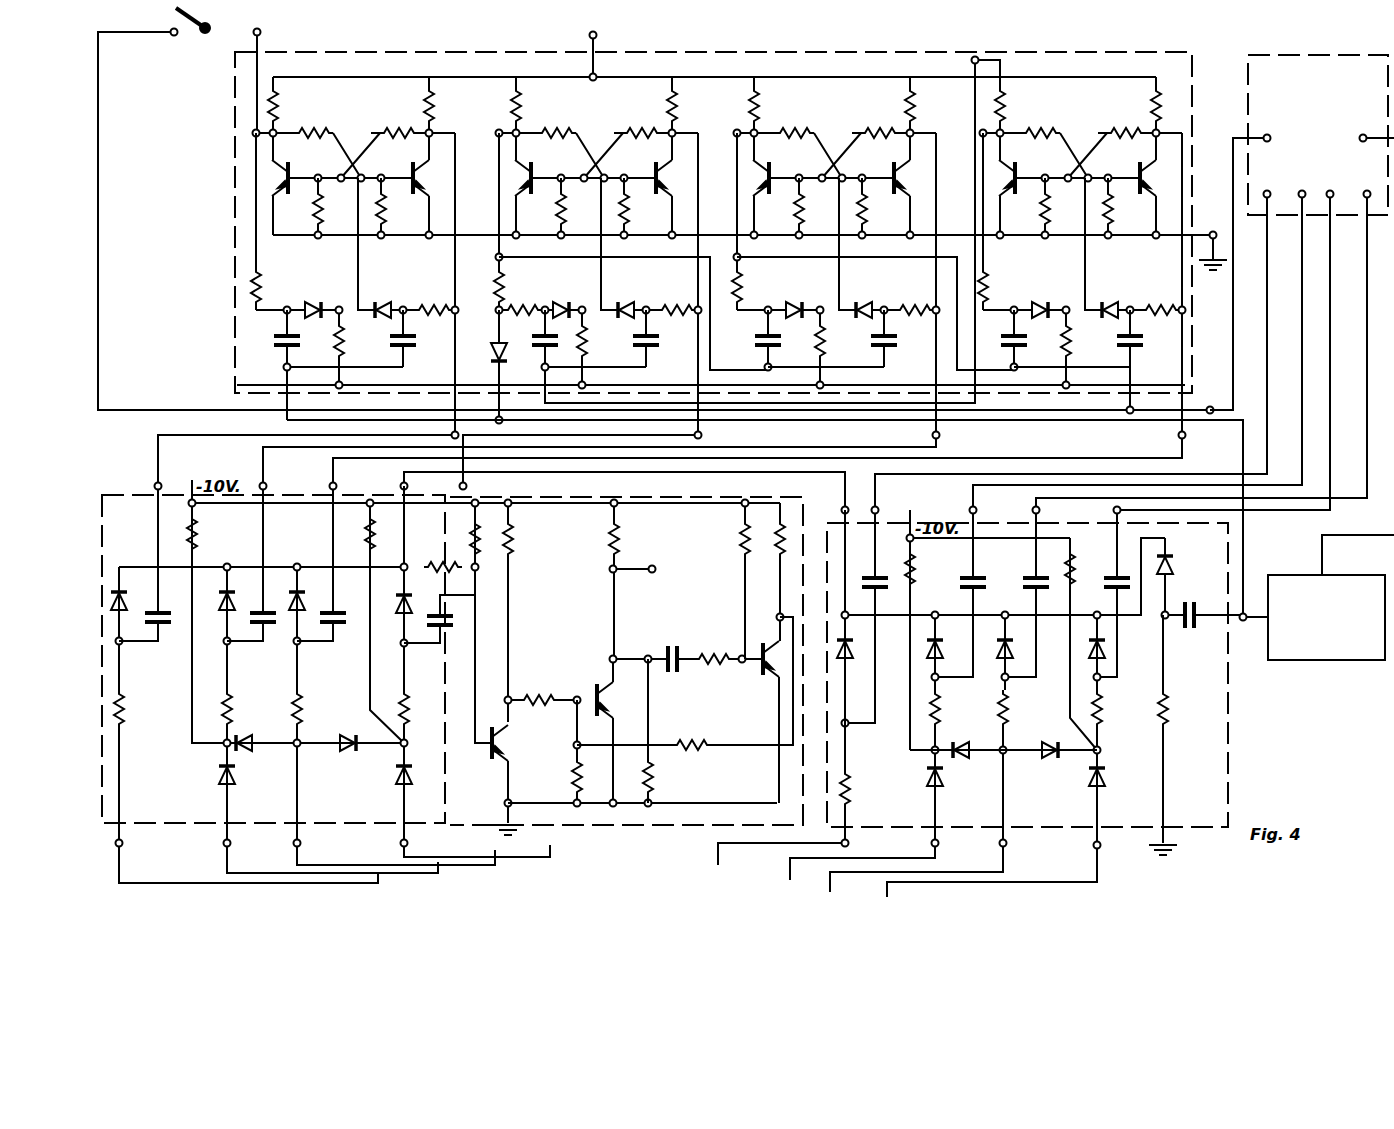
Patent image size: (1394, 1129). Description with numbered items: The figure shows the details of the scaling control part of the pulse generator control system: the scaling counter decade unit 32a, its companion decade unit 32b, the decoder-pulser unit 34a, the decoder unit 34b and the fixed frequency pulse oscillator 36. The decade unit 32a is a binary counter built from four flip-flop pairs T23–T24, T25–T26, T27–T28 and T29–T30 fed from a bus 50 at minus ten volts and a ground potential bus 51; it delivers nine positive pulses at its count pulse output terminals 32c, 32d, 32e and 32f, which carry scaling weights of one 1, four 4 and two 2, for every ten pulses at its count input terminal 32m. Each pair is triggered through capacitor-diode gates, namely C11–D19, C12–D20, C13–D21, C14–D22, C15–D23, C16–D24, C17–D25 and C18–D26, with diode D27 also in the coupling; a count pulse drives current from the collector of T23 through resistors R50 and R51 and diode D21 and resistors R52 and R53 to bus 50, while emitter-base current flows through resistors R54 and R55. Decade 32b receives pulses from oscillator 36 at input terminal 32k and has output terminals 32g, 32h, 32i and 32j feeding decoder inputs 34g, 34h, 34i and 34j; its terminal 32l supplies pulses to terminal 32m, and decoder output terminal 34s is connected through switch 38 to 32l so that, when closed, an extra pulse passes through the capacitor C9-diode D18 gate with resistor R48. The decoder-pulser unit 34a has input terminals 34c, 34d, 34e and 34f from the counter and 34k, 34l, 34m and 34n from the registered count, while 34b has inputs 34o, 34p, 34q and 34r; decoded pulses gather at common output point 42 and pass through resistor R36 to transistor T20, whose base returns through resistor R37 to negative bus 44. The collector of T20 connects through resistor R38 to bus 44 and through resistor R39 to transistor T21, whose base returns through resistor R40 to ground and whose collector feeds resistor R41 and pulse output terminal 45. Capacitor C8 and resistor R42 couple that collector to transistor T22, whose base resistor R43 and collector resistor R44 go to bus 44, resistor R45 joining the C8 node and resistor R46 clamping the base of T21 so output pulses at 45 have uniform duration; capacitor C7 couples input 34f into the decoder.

The single pole switch 38 is at (654, 209).
The scaling counter decade unit 32a is at (235, 140).
The scaling counter decade unit 32b is at (1318, 135).
The bus 50 is at (610, 77).
The ground potential bus 51 is at (708, 232).
The transistor T23 is at (292, 178).
The transistor T24 is at (435, 178).
The transistor T25 is at (546, 173).
The transistor T26 is at (678, 178).
The transistor T27 is at (784, 173).
The transistor T28 is at (916, 178).
The transistor T29 is at (1030, 173).
The transistor T30 is at (1161, 178).
The diode D19 is at (302, 300).
The diode D20 is at (390, 298).
The diode D21 is at (569, 300).
The diode D22 is at (630, 298).
The diode D23 is at (790, 300).
The diode D24 is at (875, 298).
The diode D25 is at (1029, 300).
The diode D26 is at (1118, 298).
The diode D27 is at (484, 367).
The capacitor C11 is at (320, 365).
The capacitor C12 is at (420, 338).
The capacitor C13 is at (755, 230).
The capacitor C14 is at (661, 339).
The capacitor C15 is at (749, 340).
The capacitor C16 is at (850, 339).
The capacitor C17 is at (996, 340).
The capacitor C18 is at (1093, 362).
The resistor R50 is at (508, 280).
The resistor R51 is at (525, 299).
The resistor R52 is at (633, 123).
The resistor R53 is at (669, 112).
The resistor R54 is at (562, 123).
The resistor R55 is at (521, 118).
The scaling weight 1 is at (421, 260).
The scaling weight 4 is at (665, 272).
The scaling weight 2 is at (907, 268).
The count pulse output terminal 32c is at (448, 434).
The count pulse output terminal 32d is at (704, 436).
The count pulse output terminal 32e is at (942, 436).
The count pulse output terminal 32f is at (1176, 438).
The count pulse output terminal 32g is at (1079, 341).
The count pulse output terminal 32h is at (1148, 338).
The count pulse output terminal 32i is at (1231, 342).
The count pulse output terminal 32j is at (1207, 338).
The input terminal 32k is at (1366, 126).
The input terminal 32l is at (1248, 261).
The count input terminal 32m is at (1210, 406).
The decoder-pulser unit 34a is at (140, 536).
The decoder unit 34b is at (1204, 772).
The input terminal 34c is at (154, 486).
The input terminal 34d is at (260, 486).
The input terminal 34e is at (338, 484).
The input terminal 34f is at (468, 486).
The input terminal 34g is at (874, 510).
The input terminal 34h is at (972, 511).
The input terminal 34i is at (1036, 510).
The input terminal 34j is at (1116, 510).
The input terminal 34k is at (122, 848).
The input terminal 34l is at (230, 848).
The input terminal 34m is at (300, 846).
The input terminal 34n is at (408, 846).
The input terminal 34o is at (850, 846).
The input terminal 34p is at (940, 846).
The input terminal 34q is at (1008, 846).
The input terminal 34r is at (1100, 850).
The output terminal 34s is at (1243, 622).
The fixed frequency pulse oscillator 36 is at (1355, 660).
The common output point 42 is at (404, 567).
The bus 44 is at (570, 502).
The pulse output terminal 45 is at (654, 568).
The resistor R36 is at (443, 555).
The resistor R37 is at (474, 532).
The resistor R38 is at (516, 544).
The resistor R39 is at (543, 687).
The resistor R40 is at (572, 782).
The resistor R41 is at (616, 546).
The resistor R42 is at (706, 658).
The resistor R43 is at (744, 538).
The resistor R44 is at (765, 572).
The resistor R45 is at (658, 786).
The resistor R46 is at (686, 744).
The resistor R48 is at (1164, 712).
The capacitor C7 is at (439, 621).
The capacitor C8 is at (664, 646).
The capacitor C9 is at (1211, 607).
The diode D18 is at (1168, 566).
The transistor T20 is at (519, 780).
The transistor T21 is at (623, 731).
The transistor T22 is at (758, 722).